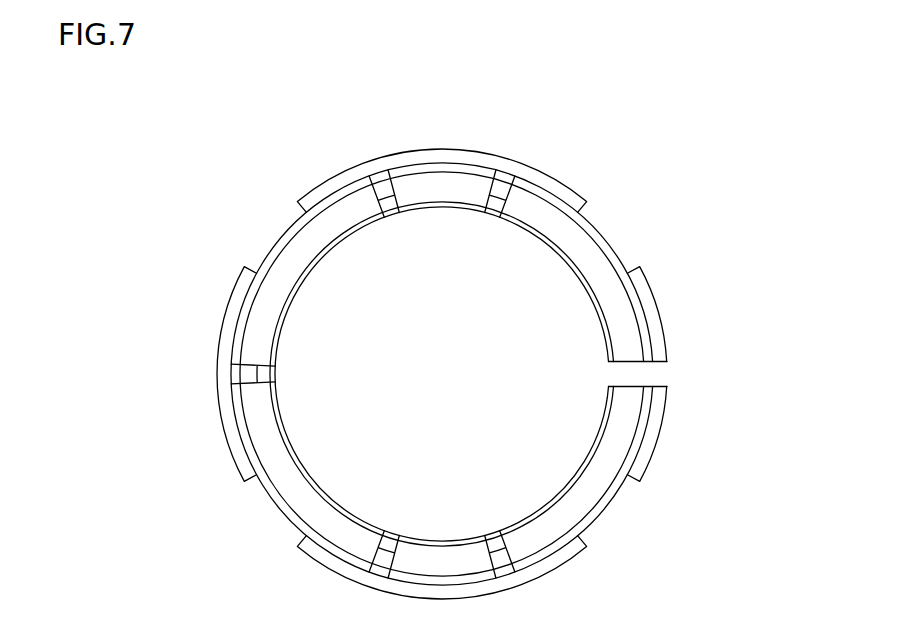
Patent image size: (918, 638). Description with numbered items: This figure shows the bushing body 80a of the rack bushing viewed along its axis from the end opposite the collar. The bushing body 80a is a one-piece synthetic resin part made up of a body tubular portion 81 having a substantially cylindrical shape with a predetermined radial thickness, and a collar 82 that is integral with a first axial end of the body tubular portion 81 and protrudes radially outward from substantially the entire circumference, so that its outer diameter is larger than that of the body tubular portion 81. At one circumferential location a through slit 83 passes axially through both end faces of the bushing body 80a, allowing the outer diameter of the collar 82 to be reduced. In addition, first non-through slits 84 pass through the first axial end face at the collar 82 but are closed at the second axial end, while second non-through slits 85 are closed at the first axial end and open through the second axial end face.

The bushing body 80a is at (214, 300).
The body tubular portion 81 is at (598, 291).
The collar 82 is at (370, 165).
The through slit 83 is at (667, 374).
The first non-through slits 84 is at (296, 204).
The second non-through slits 85 is at (380, 210).